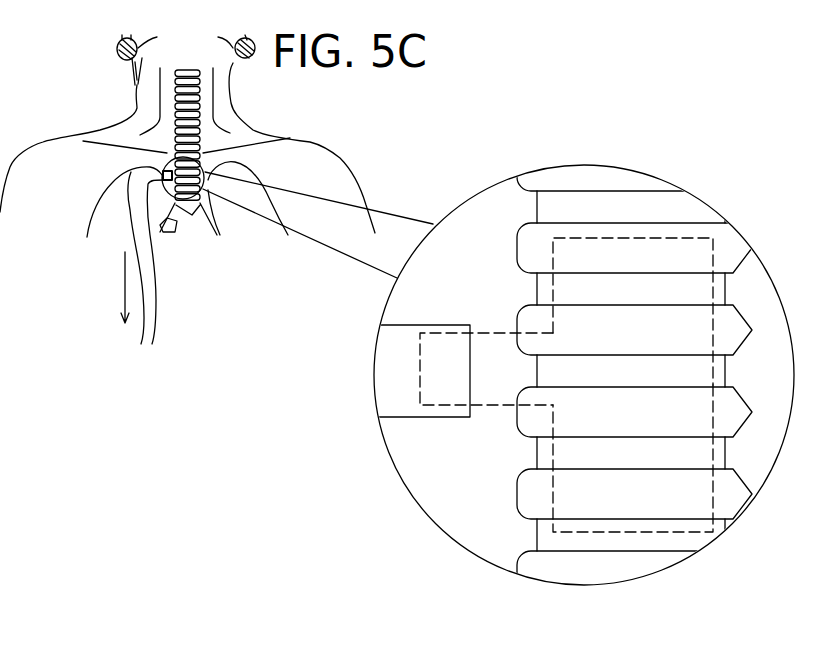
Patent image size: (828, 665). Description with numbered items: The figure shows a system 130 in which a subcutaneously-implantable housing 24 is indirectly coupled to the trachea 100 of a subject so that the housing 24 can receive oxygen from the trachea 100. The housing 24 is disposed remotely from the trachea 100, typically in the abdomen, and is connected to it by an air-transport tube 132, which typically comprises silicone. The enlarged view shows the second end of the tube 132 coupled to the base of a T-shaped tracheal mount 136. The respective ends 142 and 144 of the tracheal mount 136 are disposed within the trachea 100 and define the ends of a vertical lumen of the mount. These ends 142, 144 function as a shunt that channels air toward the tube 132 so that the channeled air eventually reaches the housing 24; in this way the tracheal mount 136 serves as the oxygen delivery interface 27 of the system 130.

The system 130 is at (417, 141).
The oxygen delivery interface 27 is at (633, 228).
The end of tracheal mount 142 is at (592, 238).
The trachea 100 is at (586, 381).
The tracheal mount 136 is at (493, 333).
The air-transport tube 132 is at (155, 322).
The end of tracheal mount 144 is at (592, 533).
The housing 24 is at (121, 327).